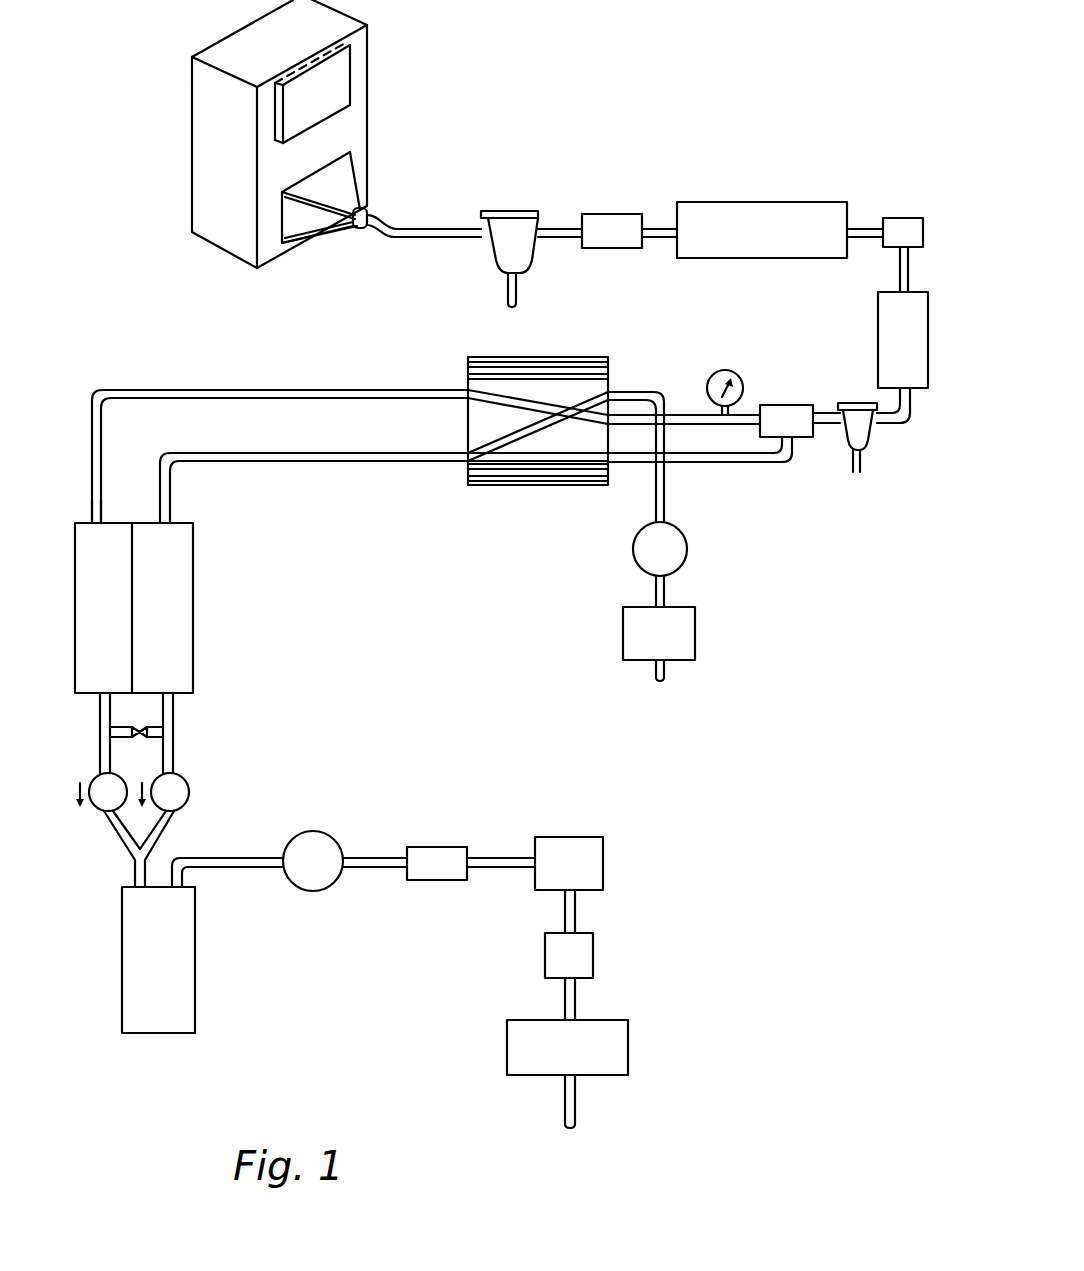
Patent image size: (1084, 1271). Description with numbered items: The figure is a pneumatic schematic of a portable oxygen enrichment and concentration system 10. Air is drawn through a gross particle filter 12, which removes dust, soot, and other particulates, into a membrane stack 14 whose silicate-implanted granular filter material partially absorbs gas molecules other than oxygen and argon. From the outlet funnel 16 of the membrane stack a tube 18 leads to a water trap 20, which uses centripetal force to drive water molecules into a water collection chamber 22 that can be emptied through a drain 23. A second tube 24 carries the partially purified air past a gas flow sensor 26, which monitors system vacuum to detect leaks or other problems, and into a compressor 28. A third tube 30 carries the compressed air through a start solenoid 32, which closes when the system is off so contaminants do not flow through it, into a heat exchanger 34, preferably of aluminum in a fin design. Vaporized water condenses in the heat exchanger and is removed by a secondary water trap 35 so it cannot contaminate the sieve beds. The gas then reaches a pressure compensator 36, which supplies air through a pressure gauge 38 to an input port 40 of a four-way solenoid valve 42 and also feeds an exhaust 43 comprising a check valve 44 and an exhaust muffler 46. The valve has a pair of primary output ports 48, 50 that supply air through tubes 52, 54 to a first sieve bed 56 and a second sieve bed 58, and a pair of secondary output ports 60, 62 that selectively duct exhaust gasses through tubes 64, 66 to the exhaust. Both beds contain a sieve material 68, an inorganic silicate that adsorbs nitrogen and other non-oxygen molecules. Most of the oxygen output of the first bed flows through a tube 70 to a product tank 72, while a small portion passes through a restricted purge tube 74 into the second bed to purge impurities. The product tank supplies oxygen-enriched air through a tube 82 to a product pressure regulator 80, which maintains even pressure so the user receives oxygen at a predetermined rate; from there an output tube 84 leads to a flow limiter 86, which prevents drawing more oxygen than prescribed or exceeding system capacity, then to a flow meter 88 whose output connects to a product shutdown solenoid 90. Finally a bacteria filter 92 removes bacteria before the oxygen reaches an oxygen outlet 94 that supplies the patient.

The portable oxygen enrichment and concentration system 10 is at (670, 102).
The gross particle filter 12 is at (340, 80).
The membrane stack 14 is at (210, 138).
The outlet funnel 16 is at (350, 177).
The tube 18 is at (425, 229).
The water trap 20 is at (493, 229).
The water collection chamber 22 is at (505, 250).
The drain 23 is at (508, 295).
The second tube 24 is at (556, 239).
The gas flow sensor 26 is at (610, 222).
The compressor 28 is at (758, 204).
The third tube 30 is at (866, 228).
The start solenoid 32 is at (908, 224).
The heat exchanger 34 is at (893, 327).
The secondary water trap 35 is at (866, 438).
The pressure compensator 36 is at (788, 414).
The pressure gauge 38 is at (732, 374).
The input port 40 is at (613, 416).
The four-way solenoid valve 42 is at (512, 486).
The exhaust 43 is at (714, 596).
The check valve 44 is at (688, 549).
The exhaust muffler 46 is at (696, 636).
The primary output port 48 is at (468, 390).
The primary output port 50 is at (470, 458).
The tube 52 is at (295, 389).
The tube 54 is at (295, 462).
The first sieve bed 56 is at (112, 527).
The second sieve bed 58 is at (194, 551).
The secondary output port 60 is at (616, 390).
The secondary output port 62 is at (613, 464).
The tube 64 is at (665, 396).
The tube 66 is at (637, 461).
The sieve material 68 is at (115, 635).
The tube 70 is at (120, 833).
The product tank 72 is at (180, 968).
The purge tube 74 is at (148, 732).
The product pressure regulator 80 is at (317, 832).
The tube 82 is at (243, 867).
The output tube 84 is at (372, 868).
The flow limiter 86 is at (430, 848).
The flow meter 88 is at (593, 860).
The product shutdown solenoid 90 is at (580, 955).
The bacteria filter 92 is at (617, 1050).
The oxygen outlet 94 is at (575, 1110).